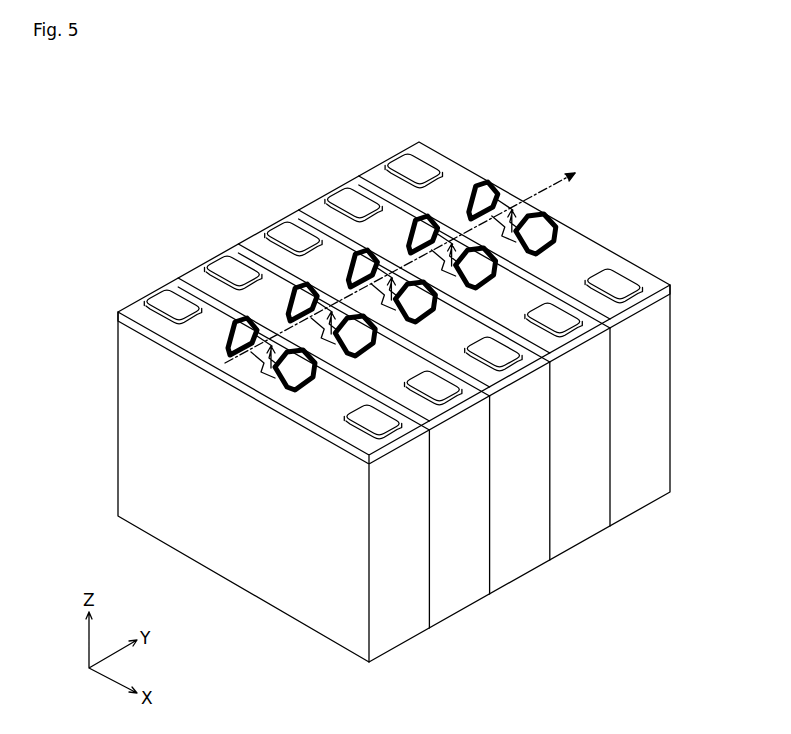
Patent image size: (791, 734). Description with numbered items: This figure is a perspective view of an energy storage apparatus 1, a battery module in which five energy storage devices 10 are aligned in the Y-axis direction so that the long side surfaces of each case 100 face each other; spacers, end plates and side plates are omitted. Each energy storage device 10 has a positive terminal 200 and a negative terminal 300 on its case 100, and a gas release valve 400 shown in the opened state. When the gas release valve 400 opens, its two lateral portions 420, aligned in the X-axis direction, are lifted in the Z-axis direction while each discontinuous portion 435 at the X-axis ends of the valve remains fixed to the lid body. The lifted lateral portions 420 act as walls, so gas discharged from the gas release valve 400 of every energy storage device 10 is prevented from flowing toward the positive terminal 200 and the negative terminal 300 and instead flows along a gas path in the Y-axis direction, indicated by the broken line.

The energy storage apparatus 1 is at (586, 119).
The energy storage device 10 is at (430, 431).
The case 100 is at (117, 373).
The positive terminal 200 is at (158, 300).
The negative terminal 300 is at (353, 417).
The gas release valve 400 is at (351, 305).
The lateral portion 420 is at (203, 390).
The discontinuous portion 435 is at (256, 385).